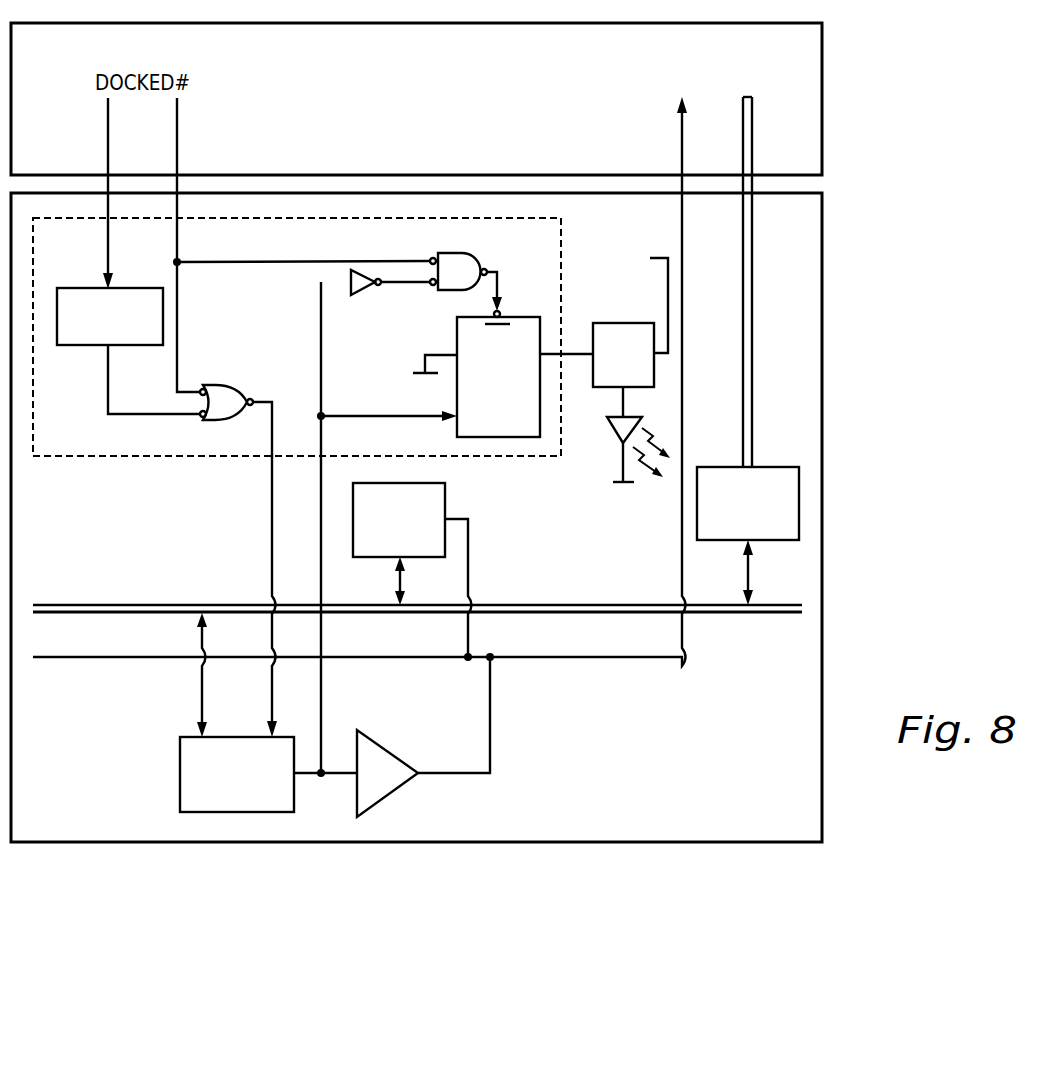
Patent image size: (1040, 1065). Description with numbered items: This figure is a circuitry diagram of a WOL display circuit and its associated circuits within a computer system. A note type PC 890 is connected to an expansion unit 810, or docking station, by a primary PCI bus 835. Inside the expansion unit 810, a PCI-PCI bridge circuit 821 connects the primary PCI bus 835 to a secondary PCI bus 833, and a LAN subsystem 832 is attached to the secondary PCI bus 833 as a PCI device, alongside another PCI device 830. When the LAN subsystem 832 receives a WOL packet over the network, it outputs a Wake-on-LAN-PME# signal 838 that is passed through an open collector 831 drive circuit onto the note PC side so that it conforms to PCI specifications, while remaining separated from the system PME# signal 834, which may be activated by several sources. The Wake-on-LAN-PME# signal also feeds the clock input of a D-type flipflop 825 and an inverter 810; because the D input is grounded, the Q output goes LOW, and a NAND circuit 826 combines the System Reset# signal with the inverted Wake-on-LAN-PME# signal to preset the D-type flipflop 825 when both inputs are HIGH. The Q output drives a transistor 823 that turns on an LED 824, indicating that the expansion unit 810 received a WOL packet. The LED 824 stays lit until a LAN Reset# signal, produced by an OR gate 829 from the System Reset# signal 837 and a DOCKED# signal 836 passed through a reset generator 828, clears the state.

The note type PC 890 is at (441, 126).
The expansion unit 810 is at (363, 293).
The DOCKED# signal line to reset generator 836 is at (106, 142).
The System Reset# signal 837 is at (179, 142).
The reset generator 828 is at (82, 346).
The OR gate 829 is at (255, 398).
The NAND circuit 826 is at (486, 266).
The D-type flipflop 825 is at (500, 318).
The transistor 823 is at (617, 323).
The LED 824 is at (617, 437).
The PCI bus 835 is at (753, 142).
The PCI-PCI bridge circuit 821 is at (746, 467).
The PCI bus 833 is at (573, 605).
The PME# signal 834 is at (573, 657).
The PCI device 830 is at (445, 503).
The LAN subsystem 832 is at (180, 758).
The PME# signal 838 is at (333, 774).
The open collector 831 is at (410, 758).